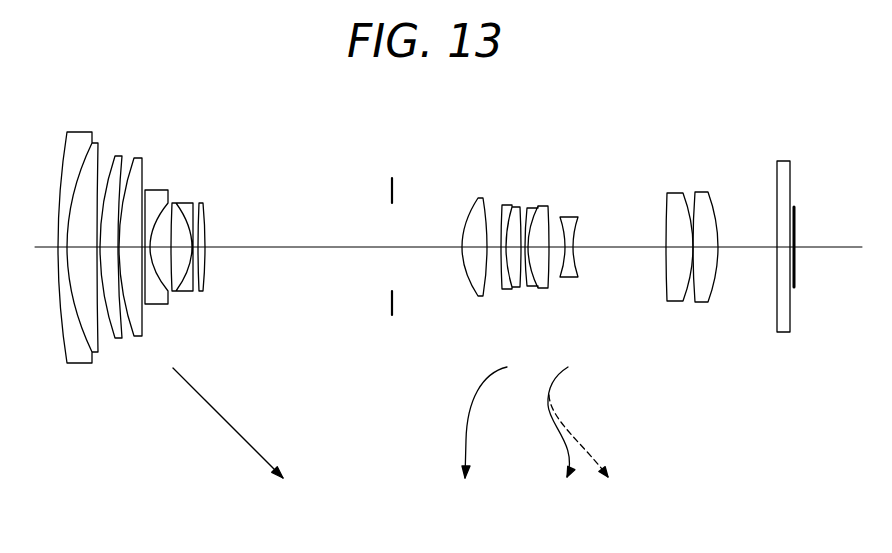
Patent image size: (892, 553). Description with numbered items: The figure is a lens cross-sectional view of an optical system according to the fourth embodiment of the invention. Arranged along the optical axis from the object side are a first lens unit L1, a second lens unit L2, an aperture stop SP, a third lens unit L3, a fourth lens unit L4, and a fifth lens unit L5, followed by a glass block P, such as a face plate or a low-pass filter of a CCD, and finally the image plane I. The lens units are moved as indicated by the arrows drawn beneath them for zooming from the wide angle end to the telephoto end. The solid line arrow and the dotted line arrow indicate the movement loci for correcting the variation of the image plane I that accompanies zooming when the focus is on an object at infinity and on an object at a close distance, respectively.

The first lens unit L1 is at (60, 127).
The second lens unit L2 is at (146, 127).
The third lens unit L3 is at (551, 125).
The fourth lens unit L4 is at (558, 125).
The fifth lens unit L5 is at (718, 125).
The aperture stop SP is at (392, 315).
The glass block P is at (791, 125).
The image plane I is at (795, 207).